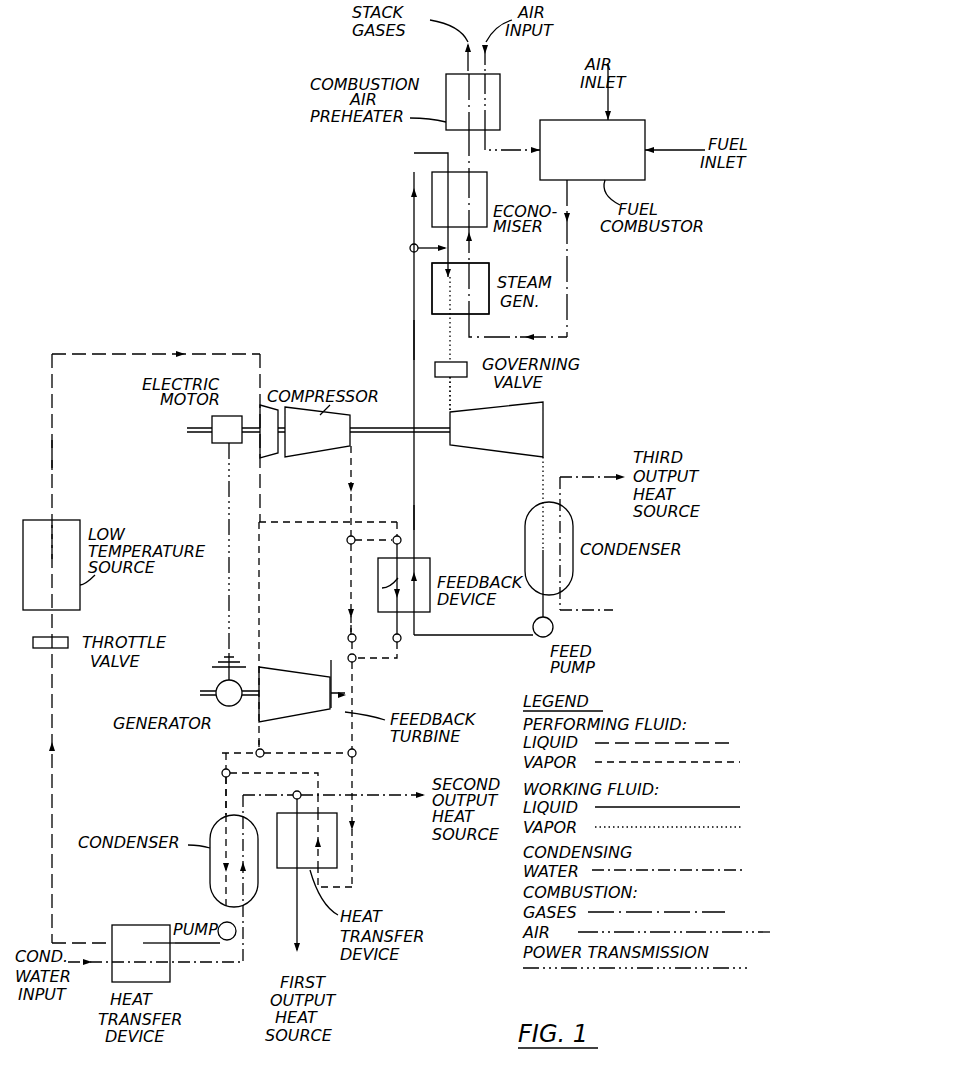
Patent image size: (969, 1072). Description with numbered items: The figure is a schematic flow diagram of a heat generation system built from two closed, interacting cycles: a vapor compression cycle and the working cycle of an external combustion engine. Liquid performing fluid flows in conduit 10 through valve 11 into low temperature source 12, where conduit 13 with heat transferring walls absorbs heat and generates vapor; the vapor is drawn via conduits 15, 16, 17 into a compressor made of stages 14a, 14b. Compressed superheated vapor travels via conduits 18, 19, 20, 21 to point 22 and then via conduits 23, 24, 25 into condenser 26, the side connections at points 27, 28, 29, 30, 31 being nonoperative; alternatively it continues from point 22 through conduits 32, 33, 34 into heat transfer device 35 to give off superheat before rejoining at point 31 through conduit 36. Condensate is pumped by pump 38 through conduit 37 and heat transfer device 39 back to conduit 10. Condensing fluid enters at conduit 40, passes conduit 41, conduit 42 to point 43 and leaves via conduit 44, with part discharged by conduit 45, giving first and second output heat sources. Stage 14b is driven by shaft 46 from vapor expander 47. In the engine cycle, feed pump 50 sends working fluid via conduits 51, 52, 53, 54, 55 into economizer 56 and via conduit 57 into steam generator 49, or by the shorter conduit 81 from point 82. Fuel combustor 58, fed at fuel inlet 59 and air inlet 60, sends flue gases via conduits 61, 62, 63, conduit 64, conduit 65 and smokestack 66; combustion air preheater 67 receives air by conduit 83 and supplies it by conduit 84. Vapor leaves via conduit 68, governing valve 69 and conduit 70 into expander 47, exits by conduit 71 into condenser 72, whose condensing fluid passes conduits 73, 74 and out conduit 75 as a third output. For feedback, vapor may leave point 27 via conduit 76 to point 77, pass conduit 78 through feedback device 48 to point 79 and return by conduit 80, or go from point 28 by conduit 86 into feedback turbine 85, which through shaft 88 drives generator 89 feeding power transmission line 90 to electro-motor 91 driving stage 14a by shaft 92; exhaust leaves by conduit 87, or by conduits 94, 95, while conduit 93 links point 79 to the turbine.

The conduit 10 is at (54, 770).
The valve 11 is at (68, 645).
The low temperature source 12 is at (72, 520).
The conduit 13 is at (52, 548).
The compressor stage 14a is at (265, 458).
The compressor stage 14b is at (300, 458).
The conduit 15 is at (54, 455).
The conduit 16 is at (90, 353).
The conduit 17 is at (262, 356).
The conduit 18 is at (353, 478).
The conduit 19 is at (349, 568).
The conduit 20 is at (355, 650).
The conduit 21 is at (353, 688).
The point 22 is at (356, 755).
The conduit 23 is at (330, 752).
The conduit 24 is at (222, 752).
The conduit 25 is at (226, 805).
The condenser 26 is at (210, 865).
The point 27 is at (347, 540).
The point 28 is at (348, 630).
The point 29 is at (355, 662).
The point 30 is at (273, 744).
The point 31 is at (222, 774).
The conduit 32 is at (345, 860).
The conduit 33 is at (340, 885).
The conduit 34 is at (356, 826).
The heat transfer device 35 is at (290, 870).
The conduit 36 is at (308, 772).
The conduit 37 is at (100, 942).
The pump 38 is at (220, 923).
The heat transfer device 39 is at (142, 925).
The conduit 40 is at (205, 963).
The conduit 41 is at (245, 958).
The conduit 42 is at (257, 795).
The point 43 is at (296, 791).
The conduit 44 is at (297, 942).
The conduit 45 is at (365, 795).
The shaft 46 is at (365, 434).
The vapor expander 47 is at (497, 457).
The feedback device 48 is at (430, 612).
The steam generator 49 is at (489, 280).
The feed pump 50 is at (556, 618).
The conduit 51 is at (490, 637).
The conduit 52 is at (414, 515).
The conduit 53 is at (412, 214).
The conduit 54 is at (412, 154).
The conduit 55 is at (440, 173).
The economizer 56 is at (483, 196).
The conduit 57 is at (432, 284).
The fuel combustor 58 is at (645, 178).
The fuel inlet 59 is at (683, 148).
The air inlet 60 is at (610, 98).
The conduit 61 is at (569, 273).
The conduit 62 is at (528, 337).
The conduit 63 is at (477, 336).
The conduit 64 is at (471, 260).
The conduit 65 is at (469, 143).
The smokestack 66 is at (466, 62).
The combustion air preheater 67 is at (500, 100).
The conduit 68 is at (413, 340).
The governing valve 69 is at (452, 382).
The conduit 70 is at (435, 368).
The conduit 71 is at (532, 506).
The condenser 72 is at (573, 565).
The conduit 73 is at (615, 610).
The conduit 74 is at (562, 498).
The conduit 75 is at (580, 477).
The conduit 76 is at (372, 538).
The point 77 is at (401, 539).
The conduit 78 is at (382, 585).
The point 79 is at (401, 640).
The conduit 80 is at (399, 657).
The conduit 81 is at (410, 245).
The point 82 is at (412, 251).
The conduit 83 is at (487, 62).
The conduit 84 is at (495, 150).
The feedback turbine 85 is at (292, 672).
The conduit 86 is at (331, 660).
The conduit 87 is at (258, 750).
The shaft 88 is at (216, 688).
The generator 89 is at (245, 700).
The power transmission line 90 is at (229, 600).
The electro-motor 91 is at (215, 444).
The shaft 92 is at (187, 430).
The conduit 93 is at (357, 637).
The conduit 94 is at (260, 578).
The conduit 95 is at (262, 522).